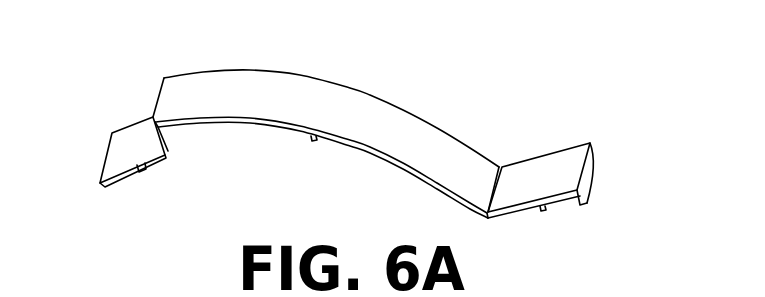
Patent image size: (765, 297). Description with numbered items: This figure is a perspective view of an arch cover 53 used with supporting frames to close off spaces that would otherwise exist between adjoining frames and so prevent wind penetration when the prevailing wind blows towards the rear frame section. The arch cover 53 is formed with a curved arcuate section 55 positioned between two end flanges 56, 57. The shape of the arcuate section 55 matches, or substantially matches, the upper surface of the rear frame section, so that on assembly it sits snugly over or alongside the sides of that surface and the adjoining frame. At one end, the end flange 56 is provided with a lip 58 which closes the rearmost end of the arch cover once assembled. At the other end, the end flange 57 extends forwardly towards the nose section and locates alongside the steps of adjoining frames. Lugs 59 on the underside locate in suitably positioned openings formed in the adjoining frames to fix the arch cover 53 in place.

The arch cover 53 is at (358, 148).
The arcuate section 55 is at (293, 93).
The end flange 56 is at (550, 165).
The end flange 57 is at (128, 138).
The lip 58 is at (592, 163).
The lugs 59 is at (143, 173).